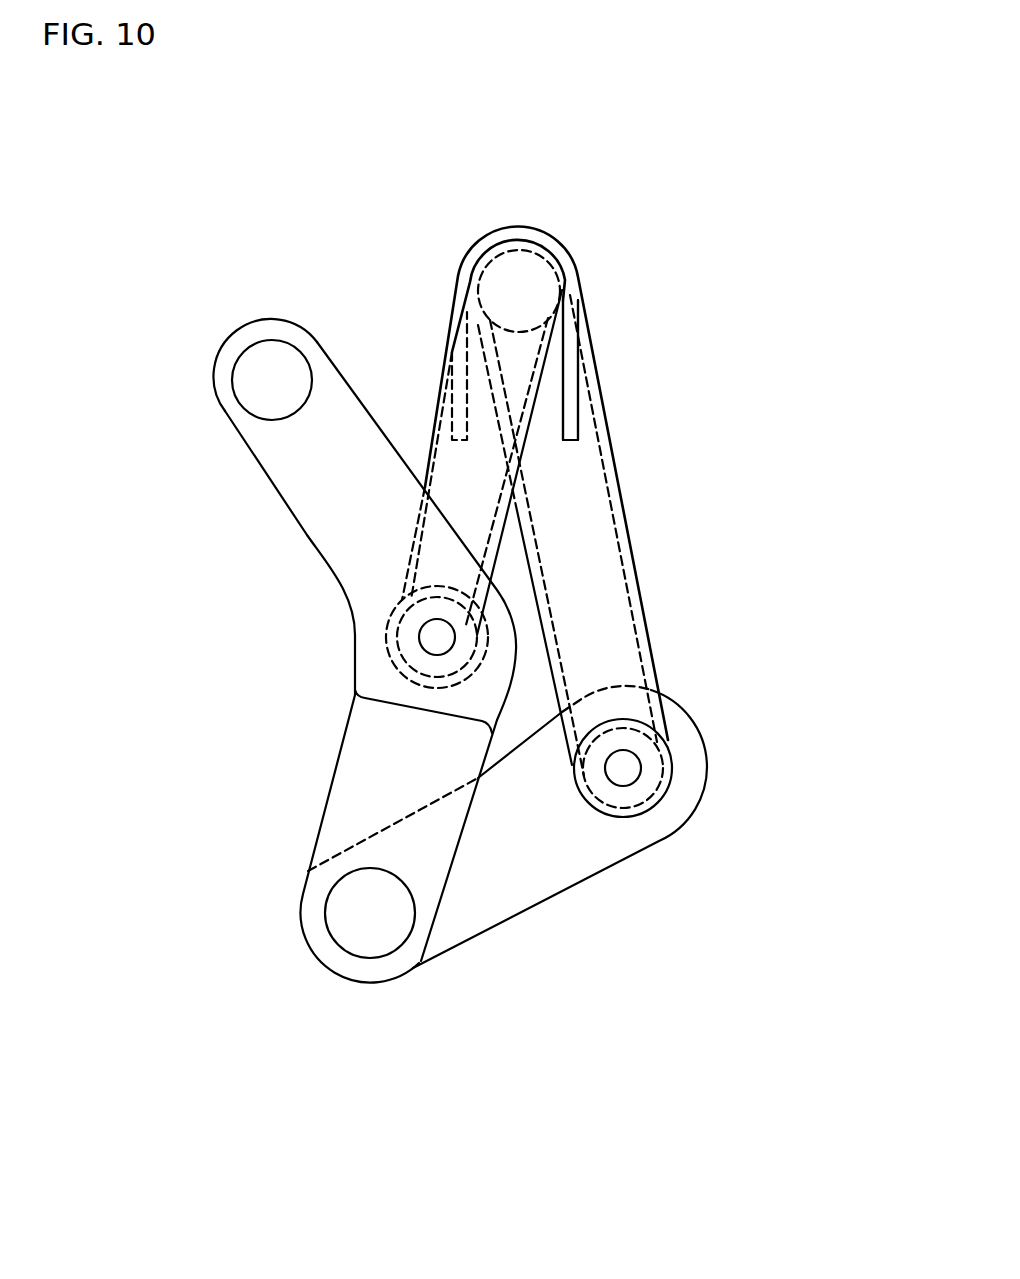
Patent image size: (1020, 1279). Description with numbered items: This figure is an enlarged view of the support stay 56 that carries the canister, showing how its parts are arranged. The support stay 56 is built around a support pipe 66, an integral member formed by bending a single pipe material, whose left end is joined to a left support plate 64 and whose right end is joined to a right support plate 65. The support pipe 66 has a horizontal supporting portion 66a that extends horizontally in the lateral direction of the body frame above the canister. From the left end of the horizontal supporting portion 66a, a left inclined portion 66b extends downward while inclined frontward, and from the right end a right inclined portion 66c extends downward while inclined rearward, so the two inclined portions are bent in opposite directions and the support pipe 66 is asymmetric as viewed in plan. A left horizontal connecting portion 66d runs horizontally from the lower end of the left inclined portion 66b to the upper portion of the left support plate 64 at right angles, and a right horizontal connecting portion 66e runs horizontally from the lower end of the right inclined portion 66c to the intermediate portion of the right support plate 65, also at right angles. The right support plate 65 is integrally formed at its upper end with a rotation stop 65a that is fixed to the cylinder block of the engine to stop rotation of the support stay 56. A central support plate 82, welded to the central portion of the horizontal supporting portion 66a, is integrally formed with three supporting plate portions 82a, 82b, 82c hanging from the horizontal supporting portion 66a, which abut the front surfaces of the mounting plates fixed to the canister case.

The support stay 56 is at (484, 618).
The left support plate 64 is at (527, 890).
The right support plate 65 is at (344, 621).
The rotation stop 65a is at (218, 358).
The support pipe 66 is at (502, 514).
The horizontal supporting portion 66a is at (524, 240).
The left inclined portion 66b is at (613, 607).
The right inclined portion 66c is at (437, 420).
The left horizontal connecting portion 66d is at (627, 806).
The right horizontal connecting portion 66e is at (388, 657).
The central support plate 82 is at (548, 307).
The supporting plate portion 82a is at (570, 370).
The supporting plate portion 82b is at (562, 401).
The supporting plate portion 82c is at (453, 441).